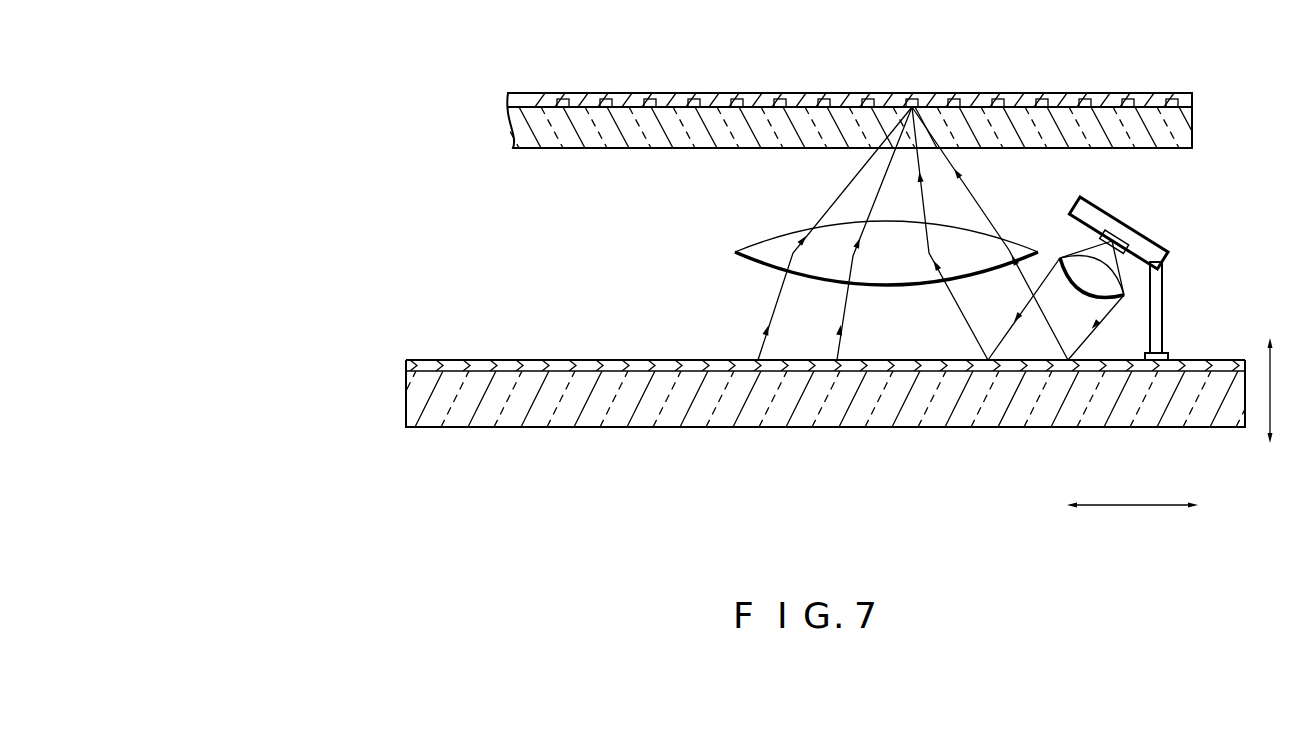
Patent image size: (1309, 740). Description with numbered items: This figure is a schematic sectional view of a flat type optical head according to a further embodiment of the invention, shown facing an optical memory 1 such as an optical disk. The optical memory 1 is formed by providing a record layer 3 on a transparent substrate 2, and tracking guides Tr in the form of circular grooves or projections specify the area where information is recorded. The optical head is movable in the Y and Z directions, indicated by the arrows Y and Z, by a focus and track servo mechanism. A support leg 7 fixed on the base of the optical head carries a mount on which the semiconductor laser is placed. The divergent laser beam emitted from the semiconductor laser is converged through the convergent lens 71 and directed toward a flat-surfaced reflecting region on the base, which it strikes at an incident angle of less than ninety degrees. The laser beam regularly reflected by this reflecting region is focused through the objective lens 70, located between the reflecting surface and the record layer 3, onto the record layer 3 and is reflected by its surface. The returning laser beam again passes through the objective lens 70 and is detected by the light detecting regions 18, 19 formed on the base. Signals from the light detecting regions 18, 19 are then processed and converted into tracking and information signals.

The optical memory 1 is at (1159, 86).
The transparent substrate 2 is at (1194, 140).
The record layer 3 is at (1194, 97).
The tracking guides Tr is at (912, 107).
The objective lens 70 is at (775, 241).
The convergent lens 71 is at (1108, 291).
The support leg 7 is at (1163, 307).
The light detecting region 18 is at (835, 370).
The light detecting region 19 is at (693, 360).
The Z direction Z is at (1273, 393).
The Y direction Y is at (1126, 505).